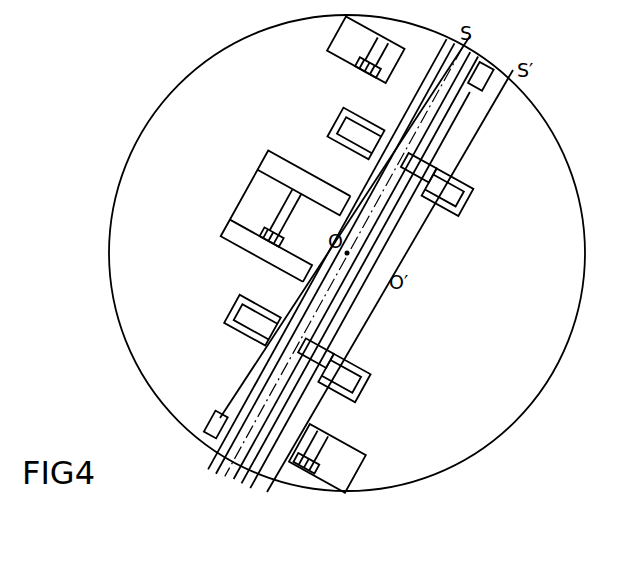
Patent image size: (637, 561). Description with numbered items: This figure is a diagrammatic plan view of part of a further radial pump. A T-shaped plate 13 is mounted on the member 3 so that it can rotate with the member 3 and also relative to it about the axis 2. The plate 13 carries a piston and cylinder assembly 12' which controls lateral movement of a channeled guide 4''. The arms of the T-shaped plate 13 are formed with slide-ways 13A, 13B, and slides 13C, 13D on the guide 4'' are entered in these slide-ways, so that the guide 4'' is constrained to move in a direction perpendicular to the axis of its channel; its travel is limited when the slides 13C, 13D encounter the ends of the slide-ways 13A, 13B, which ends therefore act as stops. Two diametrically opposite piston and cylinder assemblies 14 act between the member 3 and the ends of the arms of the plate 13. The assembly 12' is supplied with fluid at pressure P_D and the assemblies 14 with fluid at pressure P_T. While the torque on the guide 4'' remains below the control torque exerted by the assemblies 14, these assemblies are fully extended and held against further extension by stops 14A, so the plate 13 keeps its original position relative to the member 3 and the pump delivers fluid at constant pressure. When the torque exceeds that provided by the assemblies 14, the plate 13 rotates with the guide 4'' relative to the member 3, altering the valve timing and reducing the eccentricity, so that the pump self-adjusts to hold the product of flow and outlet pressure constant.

The axis 2 is at (350, 257).
The member 3 is at (527, 402).
The channeled guide 4'' is at (390, 254).
The piston and cylinder assembly 12' is at (270, 216).
The T-shaped plate 13 is at (273, 152).
The slide-way 13A is at (472, 192).
The slide-way 13B is at (354, 382).
The slide 13C is at (423, 163).
The slide 13D is at (308, 352).
The piston and cylinder assembly 14 is at (340, 50).
The stop 14A is at (487, 62).